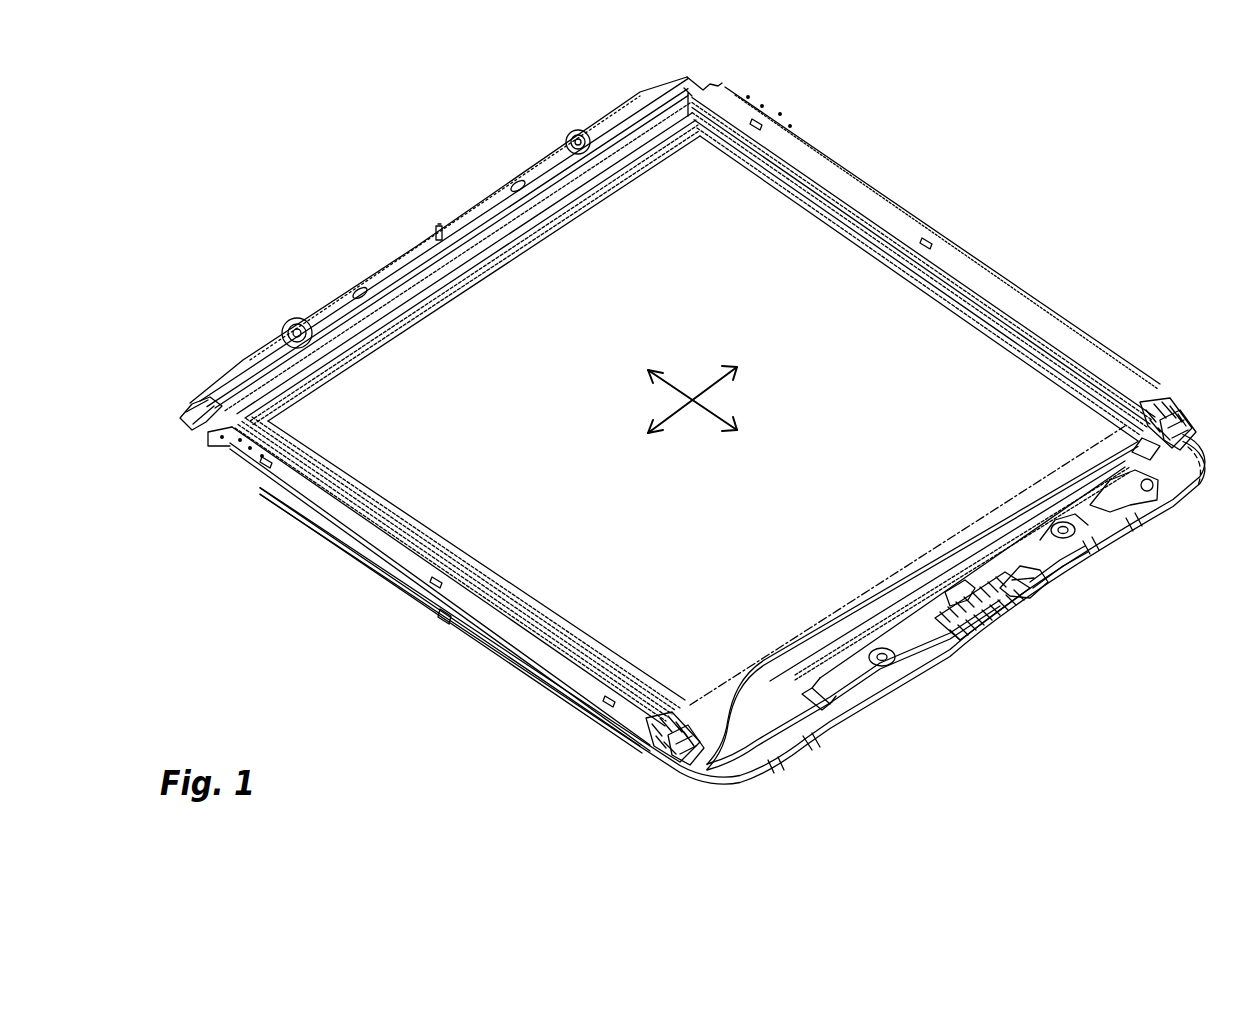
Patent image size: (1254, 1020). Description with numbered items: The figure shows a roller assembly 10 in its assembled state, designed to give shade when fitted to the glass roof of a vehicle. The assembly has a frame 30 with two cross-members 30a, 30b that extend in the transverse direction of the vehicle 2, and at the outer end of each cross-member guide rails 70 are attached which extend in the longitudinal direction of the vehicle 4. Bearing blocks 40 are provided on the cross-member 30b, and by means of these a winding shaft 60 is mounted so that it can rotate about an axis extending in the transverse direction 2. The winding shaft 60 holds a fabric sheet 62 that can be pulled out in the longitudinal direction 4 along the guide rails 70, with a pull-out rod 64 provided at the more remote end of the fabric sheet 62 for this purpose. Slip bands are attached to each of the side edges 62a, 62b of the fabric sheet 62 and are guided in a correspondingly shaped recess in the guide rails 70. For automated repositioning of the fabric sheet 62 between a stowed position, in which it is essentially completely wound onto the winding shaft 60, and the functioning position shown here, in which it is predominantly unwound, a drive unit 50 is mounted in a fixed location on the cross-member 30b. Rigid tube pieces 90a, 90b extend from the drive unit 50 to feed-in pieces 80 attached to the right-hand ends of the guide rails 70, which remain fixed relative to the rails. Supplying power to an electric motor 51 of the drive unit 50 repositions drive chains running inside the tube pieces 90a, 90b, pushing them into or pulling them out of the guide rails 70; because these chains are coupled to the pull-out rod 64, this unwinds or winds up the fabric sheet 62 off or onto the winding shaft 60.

The roller assembly 10 is at (277, 261).
The frame 30 is at (246, 362).
The cross-member 30a is at (417, 245).
The cross-member 30b is at (842, 669).
The pull-out rod 64 is at (560, 215).
The side edge of the fabric sheet 62b is at (742, 166).
The side edge of the fabric sheet 62a is at (440, 515).
The fabric sheet 62 is at (1083, 413).
The guide rails 70 is at (812, 163).
The feed-in pieces 80 is at (1150, 408).
The bearing blocks 40 is at (1133, 440).
The winding shaft 60 is at (1140, 450).
The drive unit 50 is at (1006, 648).
The electric motor 51 is at (1023, 572).
The tube piece 90a is at (940, 653).
The tube piece 90b is at (1042, 570).
The longitudinal direction of the vehicle 4 is at (668, 381).
The transverse direction of the vehicle 2 is at (672, 418).